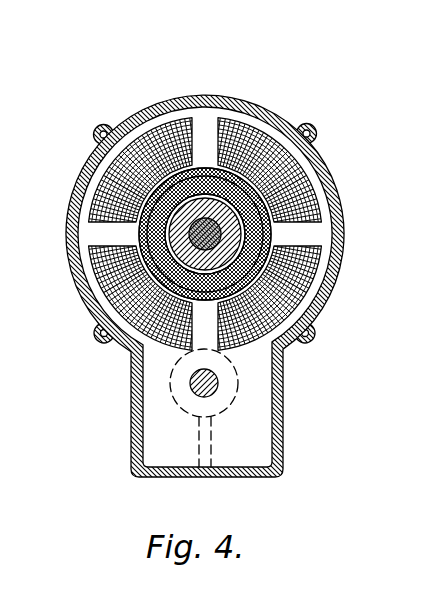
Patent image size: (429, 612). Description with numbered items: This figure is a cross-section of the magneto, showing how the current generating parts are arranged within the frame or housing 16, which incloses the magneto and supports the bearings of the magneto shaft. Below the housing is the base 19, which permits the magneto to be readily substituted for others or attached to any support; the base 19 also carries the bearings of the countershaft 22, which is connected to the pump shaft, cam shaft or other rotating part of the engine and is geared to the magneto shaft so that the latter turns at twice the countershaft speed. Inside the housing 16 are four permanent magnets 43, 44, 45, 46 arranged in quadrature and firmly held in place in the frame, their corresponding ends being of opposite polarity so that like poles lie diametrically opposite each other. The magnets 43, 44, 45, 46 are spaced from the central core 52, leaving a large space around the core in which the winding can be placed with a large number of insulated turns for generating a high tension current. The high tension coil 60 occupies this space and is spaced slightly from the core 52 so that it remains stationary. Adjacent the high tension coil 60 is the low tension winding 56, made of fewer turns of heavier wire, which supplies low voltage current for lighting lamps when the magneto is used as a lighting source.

The frame or housing 16 is at (218, 98).
The base 19 is at (281, 429).
The countershaft 22 is at (220, 383).
The permanent magnet 43 is at (148, 142).
The permanent magnet 44 is at (262, 143).
The permanent magnet 45 is at (287, 287).
The permanent magnet 46 is at (98, 288).
The core 52 is at (233, 235).
The low tension winding 56 is at (255, 195).
The high tension coil 60 is at (248, 208).